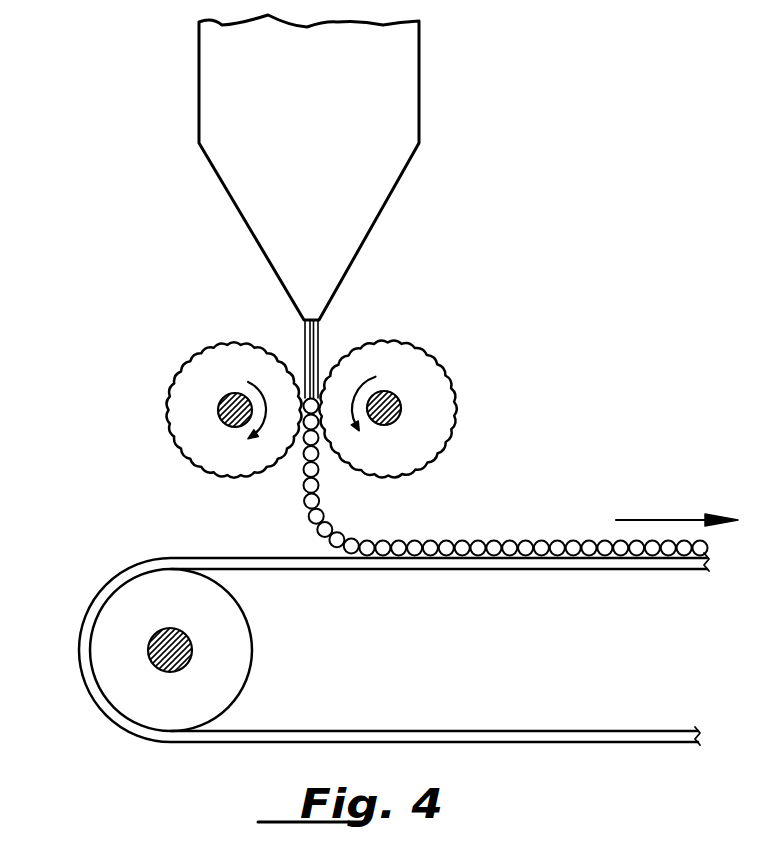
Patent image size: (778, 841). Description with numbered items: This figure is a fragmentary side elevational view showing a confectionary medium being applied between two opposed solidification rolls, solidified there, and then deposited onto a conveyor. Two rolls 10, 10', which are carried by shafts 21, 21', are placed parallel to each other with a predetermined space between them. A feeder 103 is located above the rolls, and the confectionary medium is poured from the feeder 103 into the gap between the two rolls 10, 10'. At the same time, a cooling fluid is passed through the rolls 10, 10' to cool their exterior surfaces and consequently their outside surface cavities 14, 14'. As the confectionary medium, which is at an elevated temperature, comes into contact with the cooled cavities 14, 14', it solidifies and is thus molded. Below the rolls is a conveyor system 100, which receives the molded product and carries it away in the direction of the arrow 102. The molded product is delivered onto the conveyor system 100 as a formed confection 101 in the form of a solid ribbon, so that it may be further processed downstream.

The feeder 103 is at (395, 138).
The roll 10 is at (202, 394).
The outside surface cavities 14 is at (211, 394).
The shaft 21 is at (190, 433).
The roll 10' is at (426, 381).
The outside surface cavities 14' is at (402, 381).
The shaft 21' is at (447, 415).
The formed confection 101 is at (454, 545).
The arrow 102 is at (665, 520).
The conveyor system 100 is at (130, 605).